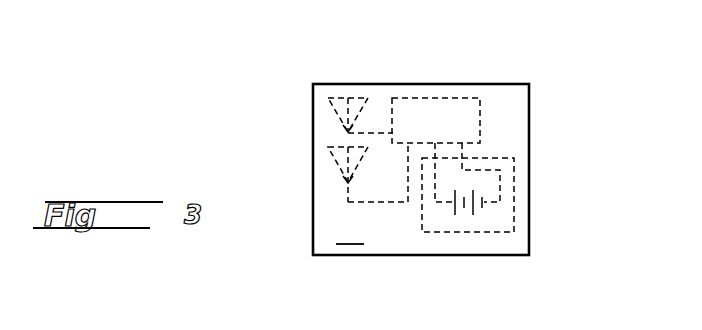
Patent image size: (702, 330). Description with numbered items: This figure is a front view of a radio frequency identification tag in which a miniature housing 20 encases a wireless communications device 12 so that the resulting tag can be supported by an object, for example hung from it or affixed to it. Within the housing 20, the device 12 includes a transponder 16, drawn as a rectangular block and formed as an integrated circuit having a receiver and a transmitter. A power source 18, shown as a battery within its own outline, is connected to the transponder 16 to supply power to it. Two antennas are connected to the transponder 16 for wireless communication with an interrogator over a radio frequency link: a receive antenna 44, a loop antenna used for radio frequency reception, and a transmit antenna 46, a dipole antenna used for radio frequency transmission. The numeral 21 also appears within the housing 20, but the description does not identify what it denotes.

The wireless communications device 12 is at (500, 123).
The transponder 16 is at (455, 95).
The power source 18 is at (515, 190).
The miniature housing 20 is at (313, 218).
The circuit board 21 is at (350, 230).
The receive antenna 44 is at (351, 95).
The transmit antenna 46 is at (337, 163).